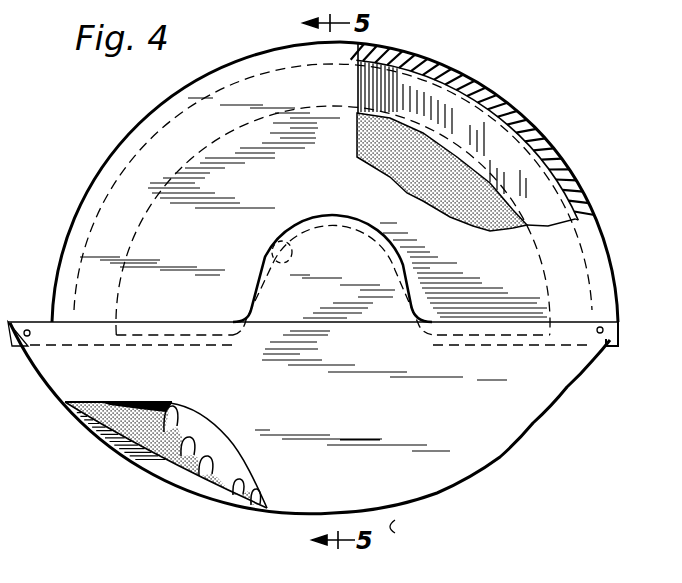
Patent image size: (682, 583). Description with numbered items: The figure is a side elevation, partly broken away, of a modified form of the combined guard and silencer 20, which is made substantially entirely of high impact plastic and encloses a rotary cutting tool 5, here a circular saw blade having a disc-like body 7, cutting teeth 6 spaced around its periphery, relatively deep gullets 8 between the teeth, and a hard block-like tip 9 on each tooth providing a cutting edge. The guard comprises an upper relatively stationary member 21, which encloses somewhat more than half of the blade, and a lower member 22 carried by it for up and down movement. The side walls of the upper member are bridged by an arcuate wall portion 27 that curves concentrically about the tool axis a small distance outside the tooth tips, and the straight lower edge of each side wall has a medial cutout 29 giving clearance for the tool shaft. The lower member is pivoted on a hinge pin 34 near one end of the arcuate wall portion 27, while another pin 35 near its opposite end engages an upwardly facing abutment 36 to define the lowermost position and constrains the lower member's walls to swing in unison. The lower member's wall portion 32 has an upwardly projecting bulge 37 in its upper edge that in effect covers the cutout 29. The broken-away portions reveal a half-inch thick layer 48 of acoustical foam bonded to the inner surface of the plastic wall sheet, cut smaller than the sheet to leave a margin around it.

The combined guard and silencer 20 is at (414, 32).
The upper guard member 21 is at (123, 140).
The lower guard member 22 is at (440, 487).
The arcuate wall portion 27 is at (484, 100).
The medial recess or cutout 29 is at (270, 241).
The wall portion 32 is at (416, 468).
The hinge pin 34 is at (620, 330).
The pin 35 is at (28, 322).
The upwardly facing abutment 36 is at (40, 350).
The upwardly projecting bulge 37 is at (327, 236).
The layer of acoustical foam 48 is at (360, 162).
The rotary cutting tool 5 is at (197, 477).
The cutting teeth 6 is at (207, 423).
The disc-like body 7 is at (203, 431).
The gullets 8 is at (178, 410).
The block-like tip 9 is at (236, 495).